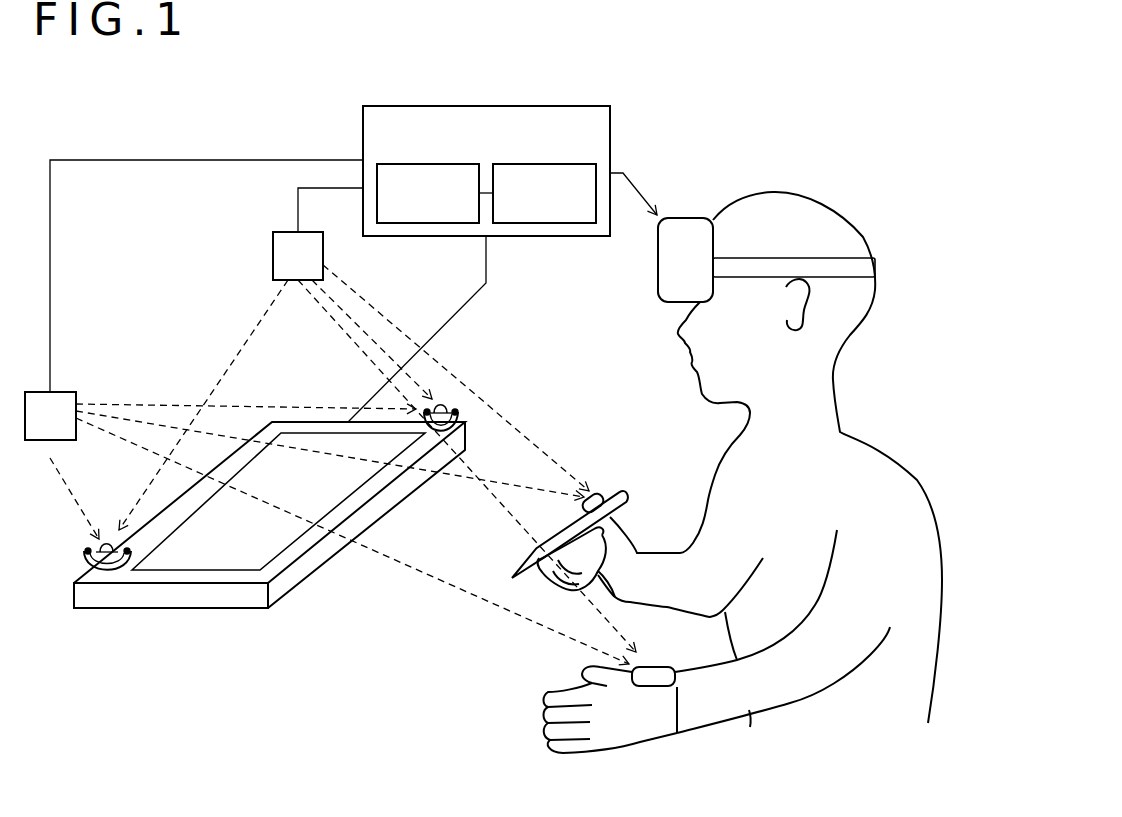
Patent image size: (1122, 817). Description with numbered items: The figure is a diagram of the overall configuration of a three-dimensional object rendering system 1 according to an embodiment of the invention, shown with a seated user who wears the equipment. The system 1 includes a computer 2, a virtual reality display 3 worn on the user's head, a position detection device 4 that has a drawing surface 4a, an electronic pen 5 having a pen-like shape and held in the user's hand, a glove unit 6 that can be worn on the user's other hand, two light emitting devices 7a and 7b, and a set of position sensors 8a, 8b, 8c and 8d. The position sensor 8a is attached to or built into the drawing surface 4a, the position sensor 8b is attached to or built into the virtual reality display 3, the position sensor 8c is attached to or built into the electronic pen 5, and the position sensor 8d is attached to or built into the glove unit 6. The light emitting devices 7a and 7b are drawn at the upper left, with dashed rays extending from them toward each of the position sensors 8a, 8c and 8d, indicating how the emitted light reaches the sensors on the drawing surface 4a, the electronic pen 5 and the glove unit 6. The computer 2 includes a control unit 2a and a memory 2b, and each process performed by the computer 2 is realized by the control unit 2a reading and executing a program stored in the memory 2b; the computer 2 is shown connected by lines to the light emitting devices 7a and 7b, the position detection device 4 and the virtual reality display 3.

The 3D object rendering system 1 is at (160, 277).
The computer 2 is at (509, 195).
The control unit 2a is at (428, 224).
The memory 2b is at (546, 224).
The virtual reality display 3 is at (766, 234).
The position sensor 8b is at (689, 230).
The position detection device 4 is at (269, 511).
The drawing surface 4a is at (311, 440).
The electronic pen 5 is at (578, 523).
The glove unit 6 is at (611, 708).
The light emitting device 7a is at (64, 391).
The light emitting device 7b is at (290, 232).
The position sensor 8a is at (106, 550).
The position sensor 8c is at (597, 498).
The position sensor 8d is at (659, 673).